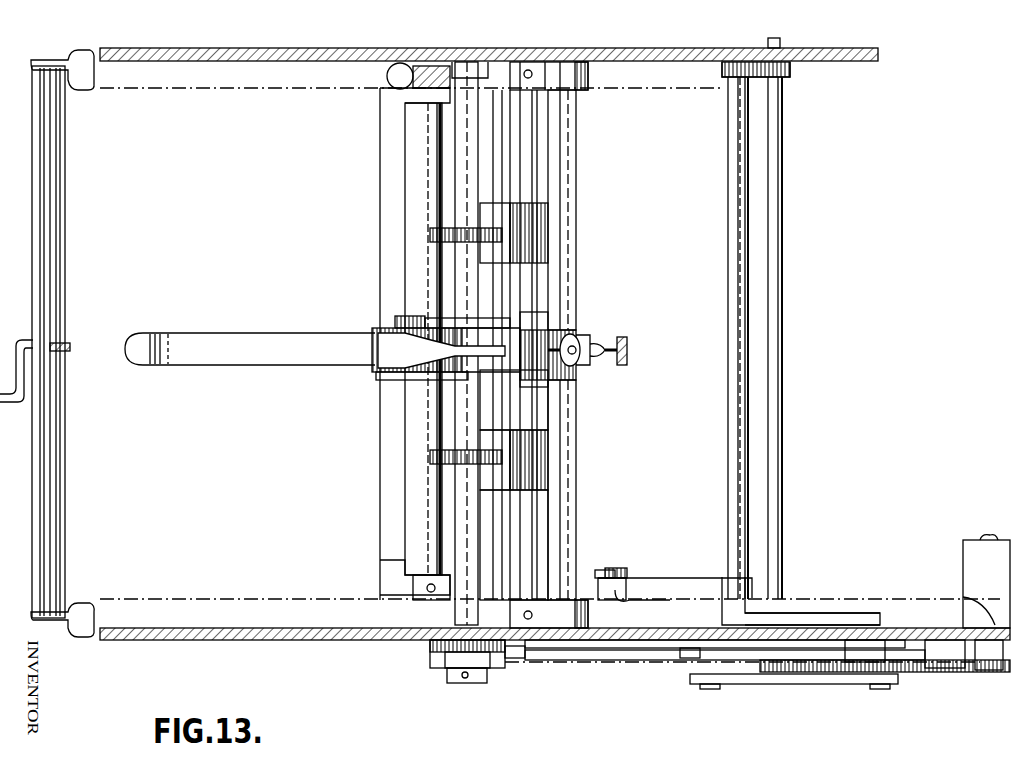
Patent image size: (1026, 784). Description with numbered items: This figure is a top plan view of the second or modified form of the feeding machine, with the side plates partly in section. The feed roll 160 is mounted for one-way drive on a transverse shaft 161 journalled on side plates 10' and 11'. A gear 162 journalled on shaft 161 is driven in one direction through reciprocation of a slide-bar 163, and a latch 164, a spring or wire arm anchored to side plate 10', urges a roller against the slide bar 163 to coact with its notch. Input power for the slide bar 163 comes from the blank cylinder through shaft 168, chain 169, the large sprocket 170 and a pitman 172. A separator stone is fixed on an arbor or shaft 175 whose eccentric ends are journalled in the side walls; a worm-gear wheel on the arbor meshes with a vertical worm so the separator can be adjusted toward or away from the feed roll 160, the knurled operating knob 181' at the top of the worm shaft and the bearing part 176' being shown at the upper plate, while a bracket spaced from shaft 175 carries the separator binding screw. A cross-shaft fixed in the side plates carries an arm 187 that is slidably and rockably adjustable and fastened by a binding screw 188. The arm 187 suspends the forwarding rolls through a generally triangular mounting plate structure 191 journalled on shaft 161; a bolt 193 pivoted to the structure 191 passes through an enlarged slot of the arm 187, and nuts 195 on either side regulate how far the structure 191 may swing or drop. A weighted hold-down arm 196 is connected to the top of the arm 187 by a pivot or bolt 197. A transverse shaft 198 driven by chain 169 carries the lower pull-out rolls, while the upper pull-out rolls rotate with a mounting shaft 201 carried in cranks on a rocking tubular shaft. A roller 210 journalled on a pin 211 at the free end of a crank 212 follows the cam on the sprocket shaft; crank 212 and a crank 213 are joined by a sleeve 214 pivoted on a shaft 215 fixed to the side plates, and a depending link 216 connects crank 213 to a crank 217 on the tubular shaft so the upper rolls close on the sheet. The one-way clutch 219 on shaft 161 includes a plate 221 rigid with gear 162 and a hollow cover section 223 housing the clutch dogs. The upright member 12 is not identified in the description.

The side plate 10' is at (555, 635).
The side plate 11' is at (489, 47).
The upright bracket 12 is at (780, 286).
The feed roll 160 is at (535, 312).
The transverse shaft 161 is at (538, 343).
The gear 162 is at (455, 655).
The slide-bar 163 is at (600, 660).
The latch 164 is at (632, 648).
The shaft 168 is at (995, 660).
The chain 169 is at (682, 660).
The large sprocket 170 is at (930, 672).
The pitman 172 is at (800, 678).
The arbor or shaft 175 is at (430, 150).
The bearing cap 176' is at (474, 48).
The ball 181' is at (389, 47).
The arm 187 is at (545, 335).
The binding screw 188 is at (626, 352).
The mounting plate structure 191 is at (385, 382).
The bolt 193 is at (575, 354).
The nuts 195 is at (572, 342).
The hold-down arm 196 is at (270, 345).
The pivot or bolt 197 is at (470, 328).
The transverse arbor or shaft 198 is at (497, 512).
The mounting shaft 201 is at (530, 400).
The roller or projection 210 is at (905, 636).
The pin 211 is at (865, 636).
The crank 212 is at (838, 584).
The crank 213 is at (672, 580).
The sleeve 214 is at (730, 600).
The shaft 215 is at (738, 424).
The depending link 216 is at (630, 598).
The crank 217 is at (584, 585).
The one-way clutch 219 is at (465, 686).
The round disk or plate 221 is at (432, 656).
The hollow cover section 223 is at (495, 668).